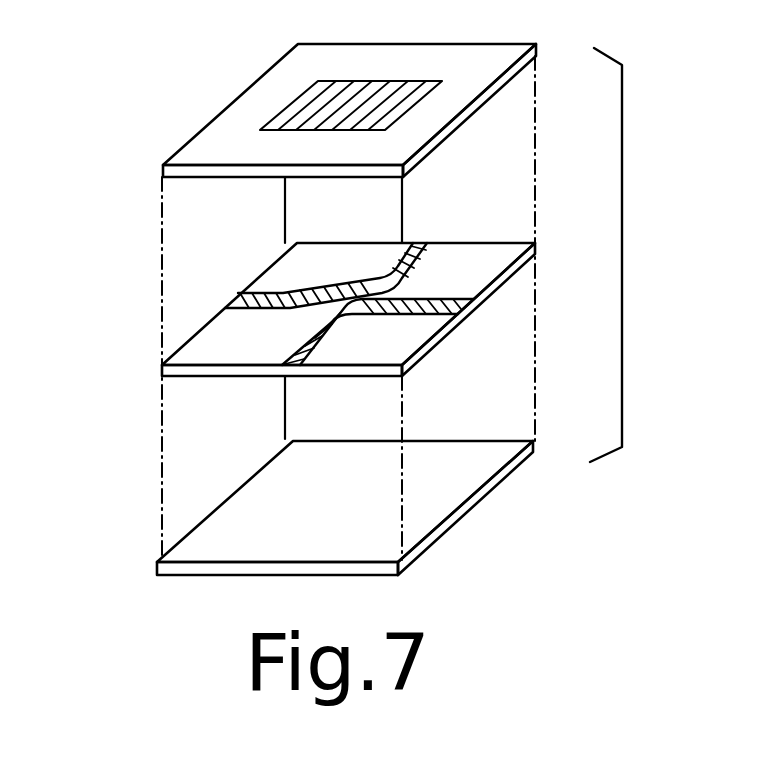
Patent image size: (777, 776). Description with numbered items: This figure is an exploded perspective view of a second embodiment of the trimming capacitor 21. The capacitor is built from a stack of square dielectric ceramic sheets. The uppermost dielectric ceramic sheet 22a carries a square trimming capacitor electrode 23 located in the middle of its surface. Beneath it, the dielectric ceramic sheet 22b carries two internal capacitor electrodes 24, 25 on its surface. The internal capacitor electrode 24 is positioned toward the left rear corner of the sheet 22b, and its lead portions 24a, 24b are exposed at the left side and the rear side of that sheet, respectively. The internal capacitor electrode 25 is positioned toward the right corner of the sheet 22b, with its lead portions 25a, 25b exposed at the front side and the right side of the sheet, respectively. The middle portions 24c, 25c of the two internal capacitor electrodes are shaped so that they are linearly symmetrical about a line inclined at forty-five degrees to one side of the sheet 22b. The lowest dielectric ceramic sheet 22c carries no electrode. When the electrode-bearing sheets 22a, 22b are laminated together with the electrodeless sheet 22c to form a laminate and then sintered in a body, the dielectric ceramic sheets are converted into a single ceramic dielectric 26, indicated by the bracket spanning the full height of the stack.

The trimming capacitor 21 is at (92, 131).
The dielectric ceramic sheet 22a is at (477, 110).
The dielectric ceramic sheet 22b is at (492, 300).
The dielectric ceramic sheet 22c is at (475, 507).
The trimming capacitor electrode 23 is at (307, 100).
The internal capacitor electrode 24 is at (325, 247).
The lead portion 24a is at (270, 300).
The lead portion 24b is at (418, 242).
The middle portion 24c is at (347, 284).
The internal capacitor electrode 25 is at (363, 365).
The lead portion 25a is at (280, 366).
The lead portion 25b is at (427, 313).
The middle portion 25c is at (378, 313).
The ceramic dielectric 26 is at (629, 255).